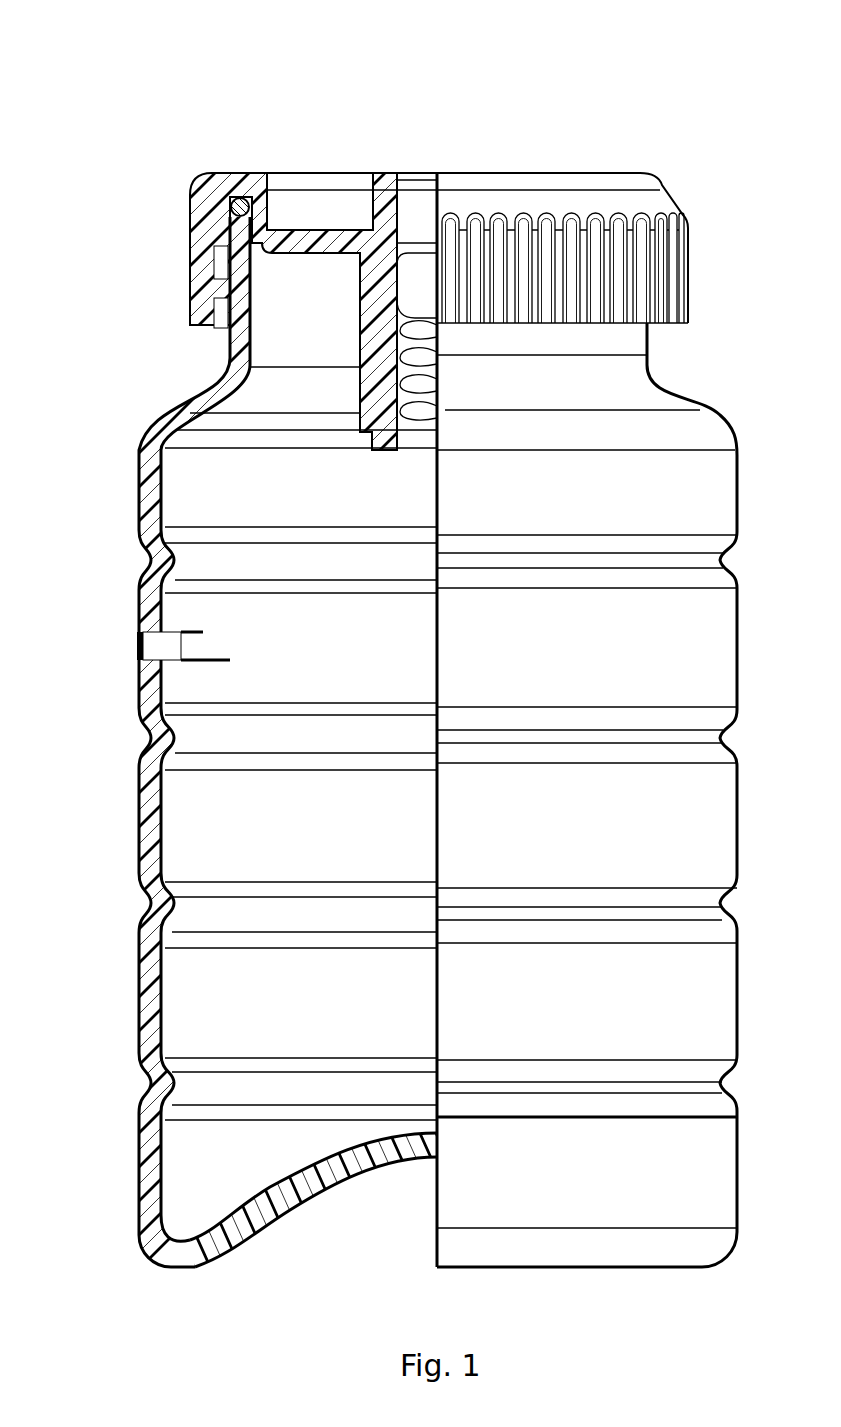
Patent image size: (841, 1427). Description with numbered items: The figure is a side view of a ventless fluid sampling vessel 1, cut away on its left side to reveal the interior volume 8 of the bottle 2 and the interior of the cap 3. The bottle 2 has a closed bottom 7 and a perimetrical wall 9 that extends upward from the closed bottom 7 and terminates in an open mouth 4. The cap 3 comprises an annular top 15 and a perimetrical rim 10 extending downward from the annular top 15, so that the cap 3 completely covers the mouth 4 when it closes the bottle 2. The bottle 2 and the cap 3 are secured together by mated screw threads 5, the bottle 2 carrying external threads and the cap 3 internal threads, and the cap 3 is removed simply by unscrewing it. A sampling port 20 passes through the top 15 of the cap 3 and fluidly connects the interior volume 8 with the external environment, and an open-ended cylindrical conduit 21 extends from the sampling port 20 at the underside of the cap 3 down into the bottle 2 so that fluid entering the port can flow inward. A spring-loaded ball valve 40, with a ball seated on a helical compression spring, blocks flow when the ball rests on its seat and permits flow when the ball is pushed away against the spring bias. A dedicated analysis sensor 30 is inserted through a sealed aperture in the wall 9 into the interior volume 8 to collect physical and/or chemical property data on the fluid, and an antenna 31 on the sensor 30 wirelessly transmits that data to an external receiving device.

The ventless fluid sampling vessel 1 is at (641, 83).
The bottle 2 is at (697, 623).
The cap 3 is at (660, 202).
The open mouth 4 is at (328, 217).
The mated screw threads 5 is at (217, 260).
The closed bottom 7 is at (560, 1263).
The interior volume 8 is at (220, 820).
The perimetrical wall 9 is at (140, 993).
The perimetrical rim 10 is at (683, 288).
The annular top 15 is at (622, 173).
The sampling port 20 is at (417, 172).
The open-ended cylindrical conduit 21 is at (425, 205).
The dedicated analysis sensor 30 is at (197, 662).
The antenna 31 is at (197, 630).
The spring-loaded ball valve 40 is at (427, 300).